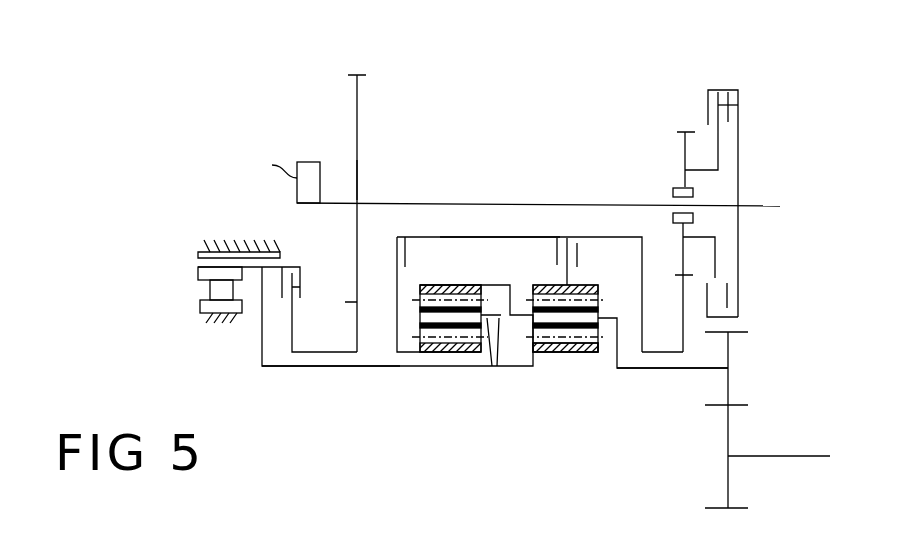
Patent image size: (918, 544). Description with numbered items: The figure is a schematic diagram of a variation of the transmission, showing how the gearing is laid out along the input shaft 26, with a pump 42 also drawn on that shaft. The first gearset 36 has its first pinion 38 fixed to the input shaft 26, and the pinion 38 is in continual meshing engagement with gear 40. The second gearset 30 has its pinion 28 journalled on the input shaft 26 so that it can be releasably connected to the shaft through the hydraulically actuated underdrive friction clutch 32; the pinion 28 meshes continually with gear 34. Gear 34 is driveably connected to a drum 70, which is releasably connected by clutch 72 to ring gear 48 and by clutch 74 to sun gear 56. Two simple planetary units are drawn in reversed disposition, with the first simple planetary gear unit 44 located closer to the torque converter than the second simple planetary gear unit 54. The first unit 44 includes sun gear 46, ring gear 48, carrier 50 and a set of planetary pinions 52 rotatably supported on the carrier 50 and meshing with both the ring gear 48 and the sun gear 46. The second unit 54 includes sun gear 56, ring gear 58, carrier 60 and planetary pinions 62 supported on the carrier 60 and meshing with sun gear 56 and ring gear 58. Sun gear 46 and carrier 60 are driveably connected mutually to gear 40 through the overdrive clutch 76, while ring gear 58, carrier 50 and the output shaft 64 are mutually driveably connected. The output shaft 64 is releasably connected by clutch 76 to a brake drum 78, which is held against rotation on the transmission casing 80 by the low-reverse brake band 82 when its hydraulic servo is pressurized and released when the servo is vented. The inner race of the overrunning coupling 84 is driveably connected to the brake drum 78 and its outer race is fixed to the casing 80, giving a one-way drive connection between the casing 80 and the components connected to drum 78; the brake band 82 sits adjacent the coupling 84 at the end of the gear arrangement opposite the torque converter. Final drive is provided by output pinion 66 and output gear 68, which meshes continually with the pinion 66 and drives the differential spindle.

The input shaft 26 is at (753, 207).
The pinion 28 is at (685, 138).
The second gearset 30 is at (690, 118).
The friction clutch 32 is at (738, 105).
The gear 34 is at (683, 332).
The first gearset 36 is at (341, 150).
The first pinion 38 is at (358, 165).
The gear 40 is at (357, 327).
The pump 42 is at (308, 160).
The first simple planetary gear unit 44 is at (544, 273).
The sun gear 46 is at (547, 360).
The ring gear 48 is at (642, 270).
The carrier 50 is at (598, 285).
The planetary pinions 52 is at (500, 366).
The second simple planetary gear unit 54 is at (490, 237).
The sun gear 56 is at (341, 333).
The ring gear 58 is at (473, 283).
The carrier 60 is at (493, 367).
The planetary pinions 62 is at (413, 303).
The output shaft 64 is at (623, 372).
The output pinion 66 is at (728, 387).
The output gear 68 is at (728, 482).
The drum 70 is at (468, 274).
The clutch 72 is at (579, 243).
The clutch 74 is at (397, 255).
The overdrive clutch 76 is at (300, 287).
The brake drum 78 is at (300, 262).
The transmission casing 80 is at (208, 240).
The brake band 82 is at (200, 253).
The coupling 84 is at (210, 292).